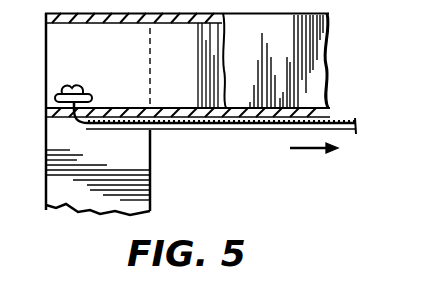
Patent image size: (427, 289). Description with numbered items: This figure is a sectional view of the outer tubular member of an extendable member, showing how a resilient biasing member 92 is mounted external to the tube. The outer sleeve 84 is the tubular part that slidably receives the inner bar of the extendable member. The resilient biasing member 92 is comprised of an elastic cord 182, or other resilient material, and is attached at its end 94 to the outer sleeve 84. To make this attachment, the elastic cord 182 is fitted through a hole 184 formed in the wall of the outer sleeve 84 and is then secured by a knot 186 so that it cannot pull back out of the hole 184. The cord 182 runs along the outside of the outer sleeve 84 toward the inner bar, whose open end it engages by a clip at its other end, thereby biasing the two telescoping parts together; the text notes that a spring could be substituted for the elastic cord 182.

The outer sleeve 84 is at (163, 108).
The resilient biasing member 92 is at (221, 138).
The end 94 is at (97, 133).
The elastic cord 182 is at (343, 120).
The hole 184 is at (98, 105).
The knot 186 is at (83, 90).